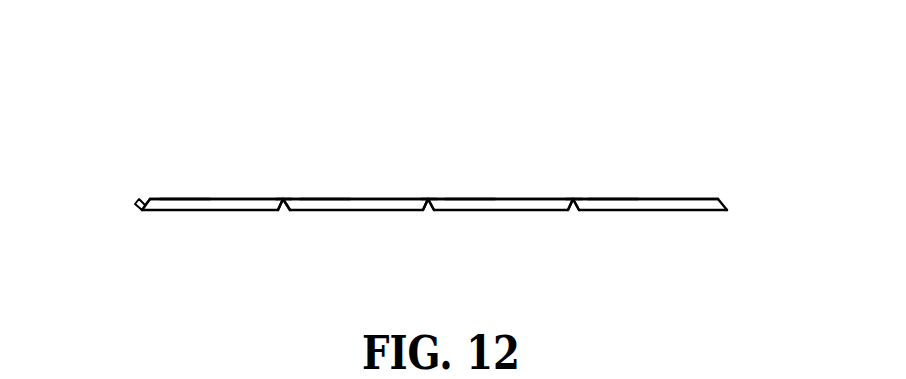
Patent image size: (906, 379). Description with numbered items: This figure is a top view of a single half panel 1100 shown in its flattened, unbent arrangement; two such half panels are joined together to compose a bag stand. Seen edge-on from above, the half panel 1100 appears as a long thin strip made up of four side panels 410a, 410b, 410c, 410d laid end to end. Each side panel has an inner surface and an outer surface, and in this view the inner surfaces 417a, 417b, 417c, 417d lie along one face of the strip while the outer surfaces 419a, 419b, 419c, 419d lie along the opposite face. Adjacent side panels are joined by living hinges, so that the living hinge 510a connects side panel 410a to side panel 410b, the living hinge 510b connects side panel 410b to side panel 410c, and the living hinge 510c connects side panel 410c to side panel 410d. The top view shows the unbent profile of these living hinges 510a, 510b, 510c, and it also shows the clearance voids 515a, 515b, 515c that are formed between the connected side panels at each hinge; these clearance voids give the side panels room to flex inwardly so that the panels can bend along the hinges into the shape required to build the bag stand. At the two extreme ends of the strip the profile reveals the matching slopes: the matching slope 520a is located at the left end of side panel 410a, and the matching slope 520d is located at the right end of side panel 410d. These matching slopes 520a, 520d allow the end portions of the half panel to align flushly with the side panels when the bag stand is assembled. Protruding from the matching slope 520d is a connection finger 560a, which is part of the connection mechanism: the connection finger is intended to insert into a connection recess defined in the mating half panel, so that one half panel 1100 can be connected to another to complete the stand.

The half stand panel 1100 is at (108, 156).
The connection finger 560a is at (138, 211).
The matching slope 520d is at (147, 192).
The matching slope 520a is at (729, 204).
The inner surface 417d is at (196, 213).
The inner surface 417c is at (356, 213).
The inner surface 417b is at (508, 213).
The inner surface 417a is at (658, 213).
The side panel 410d is at (226, 198).
The side panel 410c is at (366, 198).
The side panel 410b is at (505, 198).
The side panel 410a is at (645, 198).
The outer surface 419d is at (182, 199).
The outer surface 419c is at (325, 199).
The outer surface 419b is at (469, 199).
The outer surface 419a is at (611, 199).
The living hinge 510c is at (283, 198).
The living hinge 510b is at (428, 198).
The living hinge 510a is at (573, 198).
The clearance void 515c is at (282, 213).
The clearance void 515b is at (428, 213).
The clearance void 515a is at (573, 213).